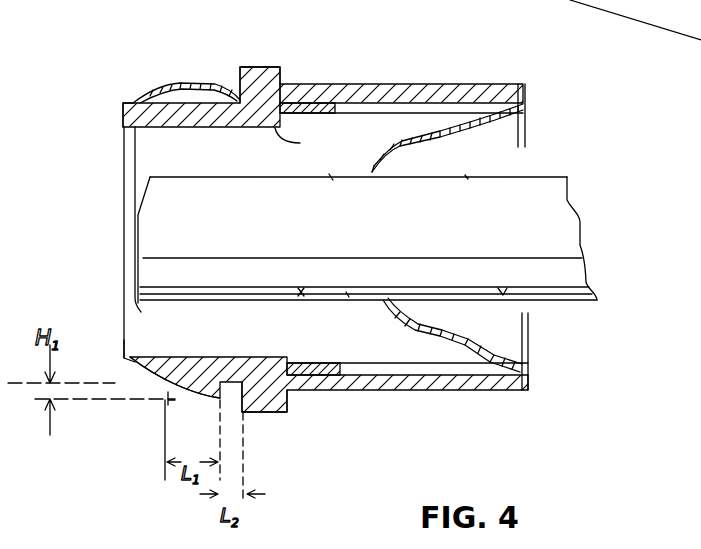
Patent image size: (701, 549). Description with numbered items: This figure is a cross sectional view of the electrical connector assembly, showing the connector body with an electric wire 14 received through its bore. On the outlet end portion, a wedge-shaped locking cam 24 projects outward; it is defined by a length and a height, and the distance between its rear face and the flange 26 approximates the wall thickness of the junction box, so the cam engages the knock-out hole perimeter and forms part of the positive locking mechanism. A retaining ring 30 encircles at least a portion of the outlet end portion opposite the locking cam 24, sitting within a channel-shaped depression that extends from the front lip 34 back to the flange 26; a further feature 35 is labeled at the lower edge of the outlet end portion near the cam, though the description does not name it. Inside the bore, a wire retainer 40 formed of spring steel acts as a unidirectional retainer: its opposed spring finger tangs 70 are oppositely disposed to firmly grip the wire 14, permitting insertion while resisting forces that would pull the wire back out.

The electric wire 14 is at (557, 177).
The locking cam 24 is at (190, 397).
The flange 26 is at (249, 66).
The retaining ring 30 is at (178, 86).
The front lip 34 is at (138, 100).
The lower taper edge 35 is at (128, 372).
The wire retainer 40 is at (526, 112).
The spring finger tangs 70 is at (422, 140).